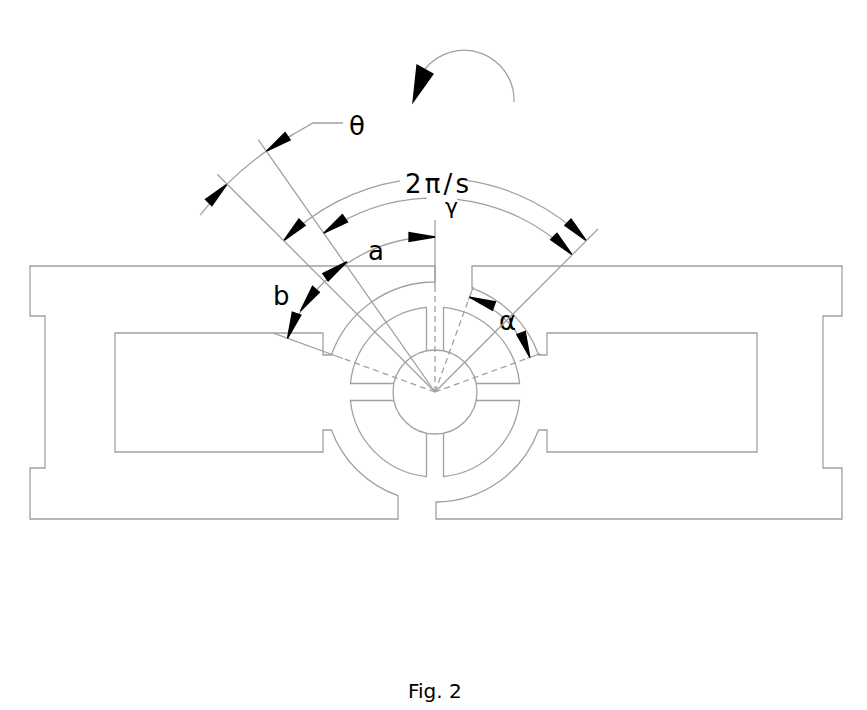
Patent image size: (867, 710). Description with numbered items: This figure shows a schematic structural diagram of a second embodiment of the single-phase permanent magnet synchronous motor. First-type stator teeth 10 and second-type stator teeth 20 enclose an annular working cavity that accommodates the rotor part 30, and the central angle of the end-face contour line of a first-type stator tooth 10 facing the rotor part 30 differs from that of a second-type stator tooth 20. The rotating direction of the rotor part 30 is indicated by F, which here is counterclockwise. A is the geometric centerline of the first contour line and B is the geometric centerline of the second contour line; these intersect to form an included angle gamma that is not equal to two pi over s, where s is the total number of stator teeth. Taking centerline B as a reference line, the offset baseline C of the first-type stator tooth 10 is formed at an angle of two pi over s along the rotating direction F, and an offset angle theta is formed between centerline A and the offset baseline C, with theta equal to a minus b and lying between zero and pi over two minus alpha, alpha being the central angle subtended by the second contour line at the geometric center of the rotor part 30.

The first-type stator teeth 10 is at (268, 318).
The second-type stator teeth 20 is at (533, 315).
The rotor part 30 is at (452, 413).
The geometric centerline of the first contour line A is at (396, 167).
The geometric centerline of the second contour line B is at (591, 261).
The offset baseline C is at (294, 251).
The rotating direction of the rotor part F is at (463, 55).